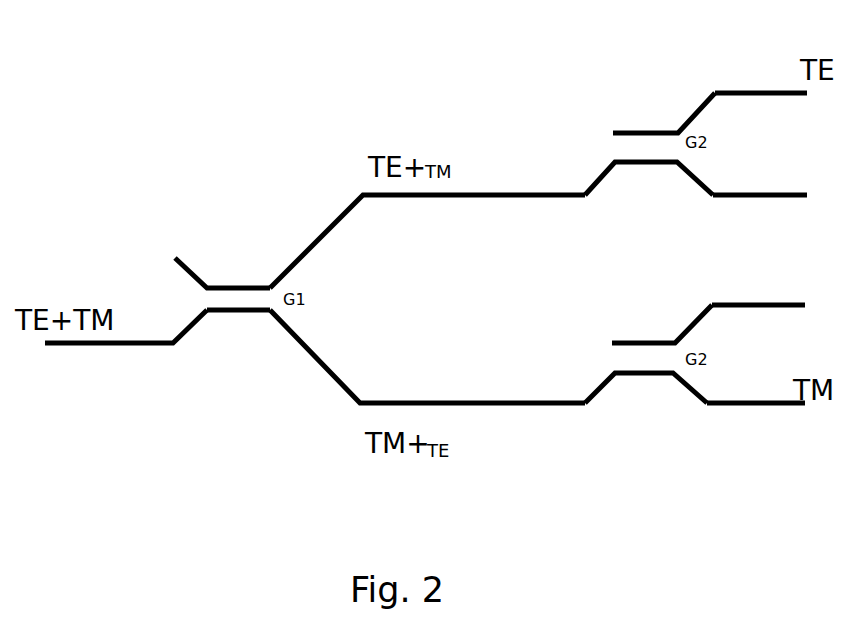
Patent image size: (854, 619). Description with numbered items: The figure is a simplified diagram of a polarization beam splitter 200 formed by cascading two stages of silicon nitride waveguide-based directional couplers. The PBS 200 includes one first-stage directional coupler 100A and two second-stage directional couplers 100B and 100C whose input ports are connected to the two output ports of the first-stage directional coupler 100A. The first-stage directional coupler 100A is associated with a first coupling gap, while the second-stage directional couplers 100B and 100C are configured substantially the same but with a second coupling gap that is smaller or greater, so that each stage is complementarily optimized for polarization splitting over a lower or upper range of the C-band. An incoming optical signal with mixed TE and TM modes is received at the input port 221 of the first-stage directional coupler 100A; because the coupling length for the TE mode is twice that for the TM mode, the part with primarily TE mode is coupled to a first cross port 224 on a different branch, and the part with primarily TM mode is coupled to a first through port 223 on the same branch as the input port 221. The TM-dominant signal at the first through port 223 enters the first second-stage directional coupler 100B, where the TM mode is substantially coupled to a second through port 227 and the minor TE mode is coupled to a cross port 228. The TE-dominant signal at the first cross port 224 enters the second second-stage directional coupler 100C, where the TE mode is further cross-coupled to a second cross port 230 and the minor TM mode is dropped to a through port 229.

The polarization beam splitter 200 is at (368, 93).
The input port 221 is at (72, 345).
The first through port 223 is at (380, 402).
The first cross port 224 is at (362, 193).
The second through port 227 is at (768, 408).
The cross port 228 is at (752, 305).
The through port 229 is at (770, 198).
The second cross port 230 is at (758, 90).
The first-stage directional coupler 100A is at (222, 312).
The first second-stage directional coupler 100B is at (628, 373).
The second second-stage directional coupler 100C is at (628, 162).